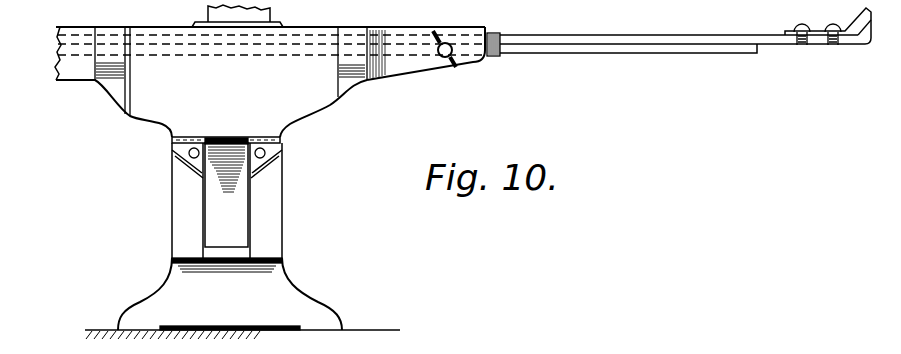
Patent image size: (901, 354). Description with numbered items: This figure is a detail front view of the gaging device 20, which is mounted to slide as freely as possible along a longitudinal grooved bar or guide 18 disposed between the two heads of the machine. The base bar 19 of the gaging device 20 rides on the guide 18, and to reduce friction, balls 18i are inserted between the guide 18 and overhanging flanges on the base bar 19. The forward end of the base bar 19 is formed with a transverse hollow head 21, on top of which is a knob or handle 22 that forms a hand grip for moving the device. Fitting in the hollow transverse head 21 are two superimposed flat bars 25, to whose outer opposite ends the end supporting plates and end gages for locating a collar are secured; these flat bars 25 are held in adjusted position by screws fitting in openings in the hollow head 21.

The longitudinal grooved bar or guide 18 is at (273, 188).
The friction balls 18i is at (300, 143).
The base bar 19 is at (240, 230).
The gaging device 20 is at (433, 67).
The transverse hollow head 21 is at (270, 82).
The knob or handle 22 is at (268, 10).
The superimposed flat bars 25 is at (680, 38).